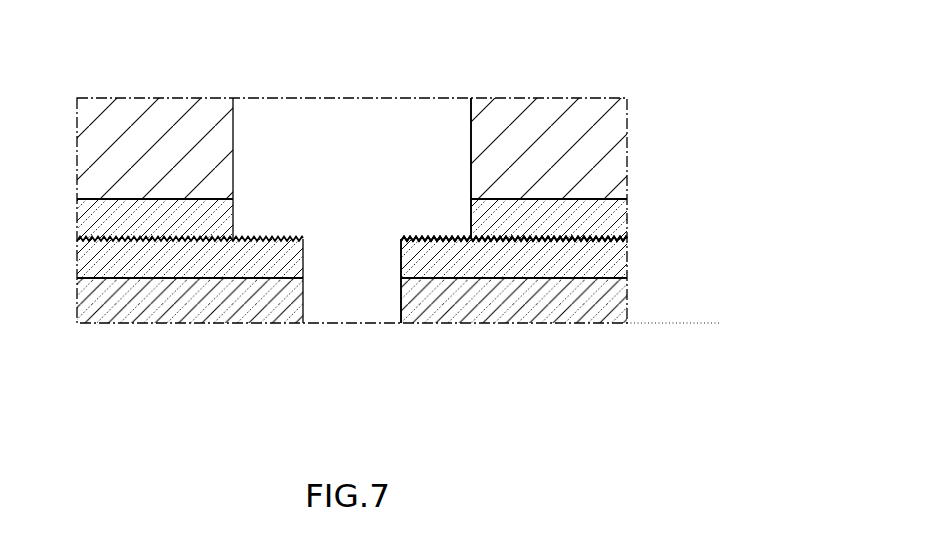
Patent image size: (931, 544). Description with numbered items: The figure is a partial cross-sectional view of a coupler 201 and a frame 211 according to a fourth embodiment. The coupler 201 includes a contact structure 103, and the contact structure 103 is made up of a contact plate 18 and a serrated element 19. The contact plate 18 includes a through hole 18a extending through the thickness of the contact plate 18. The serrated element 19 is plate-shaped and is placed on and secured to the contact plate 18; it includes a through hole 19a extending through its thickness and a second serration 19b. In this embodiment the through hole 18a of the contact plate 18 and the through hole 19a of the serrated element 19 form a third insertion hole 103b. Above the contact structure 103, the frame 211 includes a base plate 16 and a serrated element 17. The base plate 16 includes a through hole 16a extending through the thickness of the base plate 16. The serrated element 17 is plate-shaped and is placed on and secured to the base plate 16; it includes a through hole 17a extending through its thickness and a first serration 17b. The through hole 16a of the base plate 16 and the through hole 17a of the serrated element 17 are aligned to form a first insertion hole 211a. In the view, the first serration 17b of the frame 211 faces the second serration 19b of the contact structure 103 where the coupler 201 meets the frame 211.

The base plate 16 is at (627, 167).
The serrated element 17 is at (627, 215).
The frame 211 is at (755, 140).
The serrated element 19 is at (627, 258).
The contact plate 18 is at (627, 307).
The contact structure 103 is at (755, 248).
The through hole 16a is at (471, 148).
The through hole 17a is at (471, 217).
The first insertion hole 211a is at (298, 0).
The first serration 17b is at (553, 242).
The second serration 19b is at (513, 242).
The through hole 19a is at (401, 267).
The through hole 18a is at (401, 302).
The third insertion hole 103b is at (300, 337).
The coupler 201 is at (627, 375).